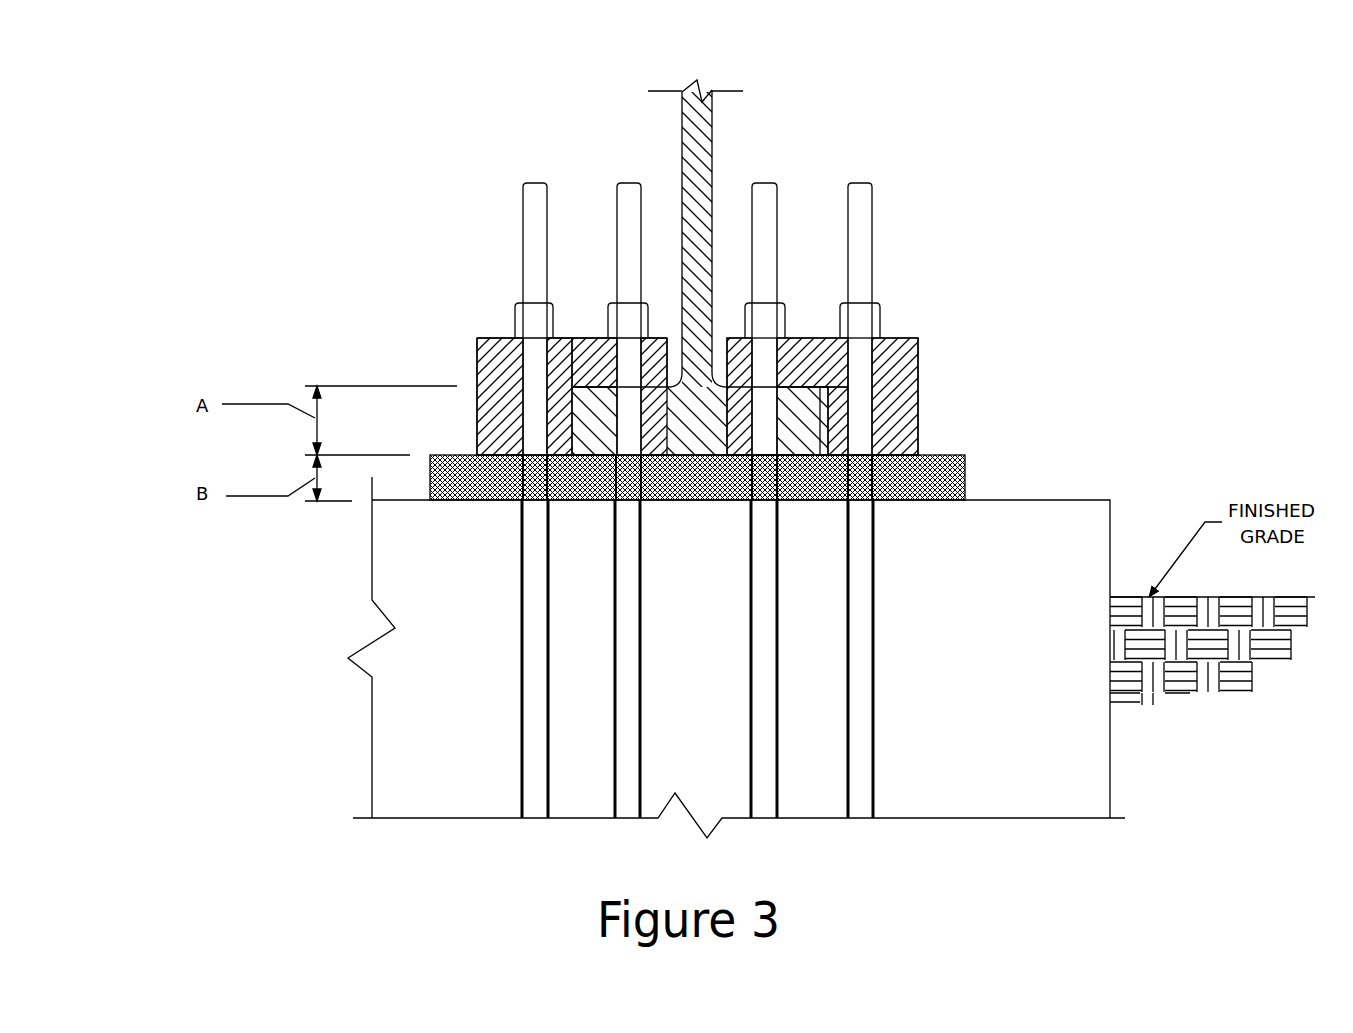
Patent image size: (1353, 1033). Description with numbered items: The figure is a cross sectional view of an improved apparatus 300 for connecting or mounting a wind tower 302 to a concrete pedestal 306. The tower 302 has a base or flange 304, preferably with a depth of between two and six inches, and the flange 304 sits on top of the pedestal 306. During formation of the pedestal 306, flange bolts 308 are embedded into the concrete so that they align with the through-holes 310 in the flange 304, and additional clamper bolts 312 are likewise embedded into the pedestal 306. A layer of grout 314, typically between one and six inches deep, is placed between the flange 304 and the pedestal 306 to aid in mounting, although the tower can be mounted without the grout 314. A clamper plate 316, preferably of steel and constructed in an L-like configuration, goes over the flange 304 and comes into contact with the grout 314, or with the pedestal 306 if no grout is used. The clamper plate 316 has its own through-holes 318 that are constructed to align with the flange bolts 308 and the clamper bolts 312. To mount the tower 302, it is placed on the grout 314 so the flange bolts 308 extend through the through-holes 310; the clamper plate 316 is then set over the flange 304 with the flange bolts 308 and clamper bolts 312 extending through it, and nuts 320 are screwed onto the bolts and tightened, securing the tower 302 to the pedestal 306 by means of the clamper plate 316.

The apparatus 300 is at (273, 837).
The tower 302 is at (713, 187).
The flange 304 is at (602, 378).
The pedestal 306 is at (1025, 499).
The flange bolts 308 is at (780, 187).
The through-holes 310 is at (605, 412).
The clamper bolts 312 is at (868, 245).
The grout 314 is at (967, 452).
The clamper plate 316 is at (919, 337).
The through-holes 318 is at (783, 360).
The nuts 320 is at (878, 307).